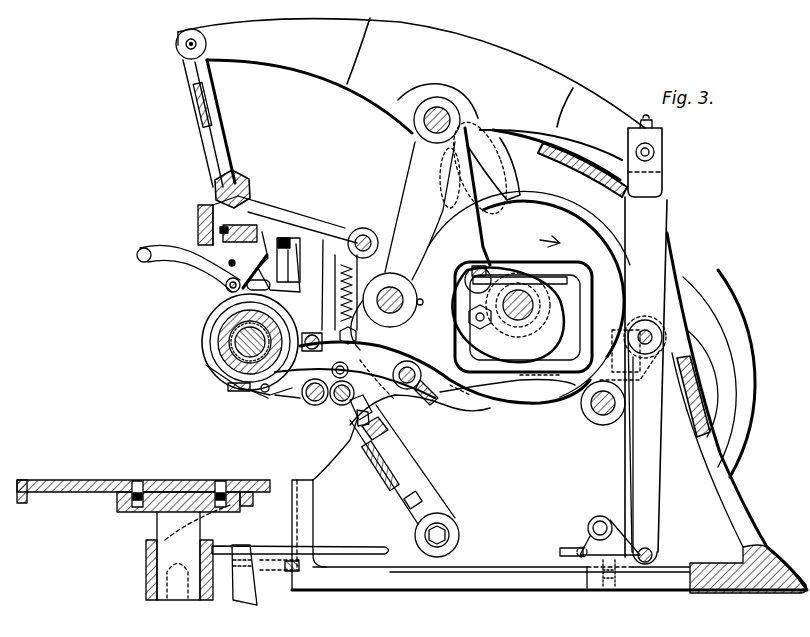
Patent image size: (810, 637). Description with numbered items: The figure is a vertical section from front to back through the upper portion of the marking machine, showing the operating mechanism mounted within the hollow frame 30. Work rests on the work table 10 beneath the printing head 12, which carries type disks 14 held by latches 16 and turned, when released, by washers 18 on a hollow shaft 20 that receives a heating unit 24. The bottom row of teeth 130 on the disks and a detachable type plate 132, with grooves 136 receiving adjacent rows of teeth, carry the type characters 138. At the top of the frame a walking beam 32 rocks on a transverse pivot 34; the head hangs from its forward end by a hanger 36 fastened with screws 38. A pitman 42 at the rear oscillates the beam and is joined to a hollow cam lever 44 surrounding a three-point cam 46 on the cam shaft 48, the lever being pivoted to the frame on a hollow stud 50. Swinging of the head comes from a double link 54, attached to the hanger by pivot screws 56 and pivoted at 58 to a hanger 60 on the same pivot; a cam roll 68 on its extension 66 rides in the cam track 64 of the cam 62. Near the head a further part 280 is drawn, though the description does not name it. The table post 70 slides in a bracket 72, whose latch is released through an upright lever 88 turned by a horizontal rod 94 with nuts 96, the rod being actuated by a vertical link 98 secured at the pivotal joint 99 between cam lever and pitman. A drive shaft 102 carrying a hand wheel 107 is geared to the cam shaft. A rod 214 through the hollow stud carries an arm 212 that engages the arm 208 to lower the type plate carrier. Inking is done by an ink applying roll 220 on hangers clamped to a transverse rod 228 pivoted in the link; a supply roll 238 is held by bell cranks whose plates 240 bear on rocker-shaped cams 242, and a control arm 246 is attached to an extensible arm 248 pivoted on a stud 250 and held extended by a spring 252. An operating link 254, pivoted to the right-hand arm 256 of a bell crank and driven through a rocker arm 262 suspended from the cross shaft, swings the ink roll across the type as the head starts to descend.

The work table 10 is at (85, 490).
The printing head 12 is at (208, 336).
The type disks 14 is at (222, 353).
The latches 16 is at (185, 250).
The washers 18 is at (225, 380).
The hollow shaft 20 is at (262, 392).
The heating unit 24 is at (222, 332).
The hollow frame 30 is at (700, 400).
The walking beam 32 is at (410, 75).
The transverse pivot 34 is at (444, 110).
The hanger 36 is at (208, 112).
The screws 38 is at (200, 215).
The pitman 42 is at (650, 240).
The cam lever 44 is at (580, 290).
The three-point cam 46 is at (600, 300).
The cam shaft 48 is at (530, 312).
The hollow stud 50 is at (405, 303).
The link 54 is at (317, 212).
The pivot screws 56 is at (240, 170).
The pivot 58 is at (490, 258).
The hanger 60 is at (463, 163).
The cam 62 is at (590, 230).
The cam track 64 is at (628, 240).
The extension 66 is at (467, 312).
The cam roll 68 is at (470, 325).
The post 70 is at (168, 530).
The bracket 72 is at (148, 598).
The upright lever 88 is at (254, 597).
The horizontal rod 94 is at (370, 556).
The nuts 96 is at (618, 520).
The vertical link 98 is at (655, 460).
The pivotal joint 99 is at (660, 335).
The drive shaft 102 is at (603, 418).
The hand wheel 107 is at (752, 370).
The bottom row of teeth 130 is at (278, 400).
The type plate 132 is at (238, 392).
The grooves 136 is at (308, 360).
The type characters 138 is at (268, 399).
The arm 208 is at (322, 288).
The arm 212 is at (432, 365).
The rod 214 is at (390, 288).
The ink applying roll 220 is at (315, 405).
The transverse rod 228 is at (364, 228).
The supply roll 238 is at (343, 406).
The plates 240 is at (405, 390).
The rocker-shaped cams 242 is at (430, 400).
The control arm 246 is at (410, 420).
The extensible arm 248 is at (385, 465).
The stud 250 is at (458, 538).
The spring 252 is at (412, 475).
The operating link 254 is at (455, 395).
The right-hand arm 256 is at (622, 377).
The rocker arm 262 is at (545, 150).
The slide 280 is at (279, 236).